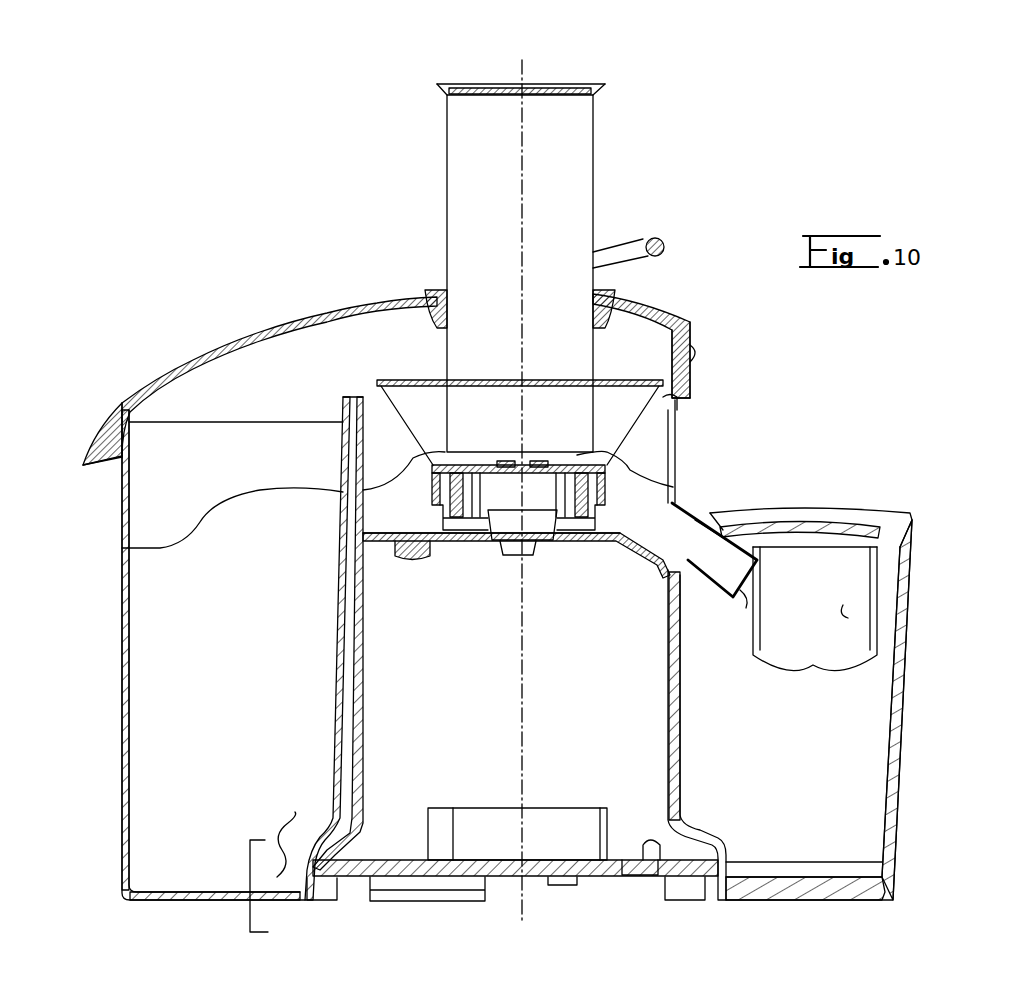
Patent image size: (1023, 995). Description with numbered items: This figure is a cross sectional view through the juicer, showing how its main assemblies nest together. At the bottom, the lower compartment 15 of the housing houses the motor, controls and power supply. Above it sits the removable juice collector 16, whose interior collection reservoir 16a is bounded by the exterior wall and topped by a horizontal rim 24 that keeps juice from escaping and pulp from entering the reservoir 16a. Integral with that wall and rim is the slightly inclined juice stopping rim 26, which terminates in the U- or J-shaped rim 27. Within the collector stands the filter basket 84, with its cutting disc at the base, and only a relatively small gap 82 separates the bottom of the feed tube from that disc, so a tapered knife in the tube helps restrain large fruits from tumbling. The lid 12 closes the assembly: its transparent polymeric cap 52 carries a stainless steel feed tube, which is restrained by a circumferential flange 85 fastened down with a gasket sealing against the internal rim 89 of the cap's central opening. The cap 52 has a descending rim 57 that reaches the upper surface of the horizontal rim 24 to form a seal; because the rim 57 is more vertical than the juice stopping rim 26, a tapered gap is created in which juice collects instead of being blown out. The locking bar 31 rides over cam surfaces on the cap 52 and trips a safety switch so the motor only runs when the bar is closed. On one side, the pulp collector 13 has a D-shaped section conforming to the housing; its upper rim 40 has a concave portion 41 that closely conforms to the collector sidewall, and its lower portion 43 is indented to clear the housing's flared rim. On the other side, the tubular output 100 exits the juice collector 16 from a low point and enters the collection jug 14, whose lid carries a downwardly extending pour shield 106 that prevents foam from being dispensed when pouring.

The lid with feed tube 12 is at (607, 200).
The locking bar 31 is at (640, 250).
The polymeric cap 52 is at (268, 318).
The upper rim 40 is at (120, 403).
The circumferential flange 85 is at (432, 290).
The internal rim 89 is at (614, 330).
The 'U' or 'J' shaped rim 27 is at (700, 318).
The juice stopping rim 26 is at (692, 332).
The descending rim 57 is at (692, 356).
The horizontal rim 24 is at (674, 406).
The concave portion 41 is at (355, 397).
The juice collector 16 is at (676, 450).
The collection reservoir 16a is at (408, 512).
The gap 82 is at (672, 486).
The tubular output 100 is at (720, 558).
The collection jug 14 is at (875, 720).
The pour shield 106 is at (885, 600).
The pulp collector 13 is at (248, 662).
The filter basket 84 is at (122, 548).
The lower compartment 15 is at (606, 720).
The lower portion 43 is at (275, 879).